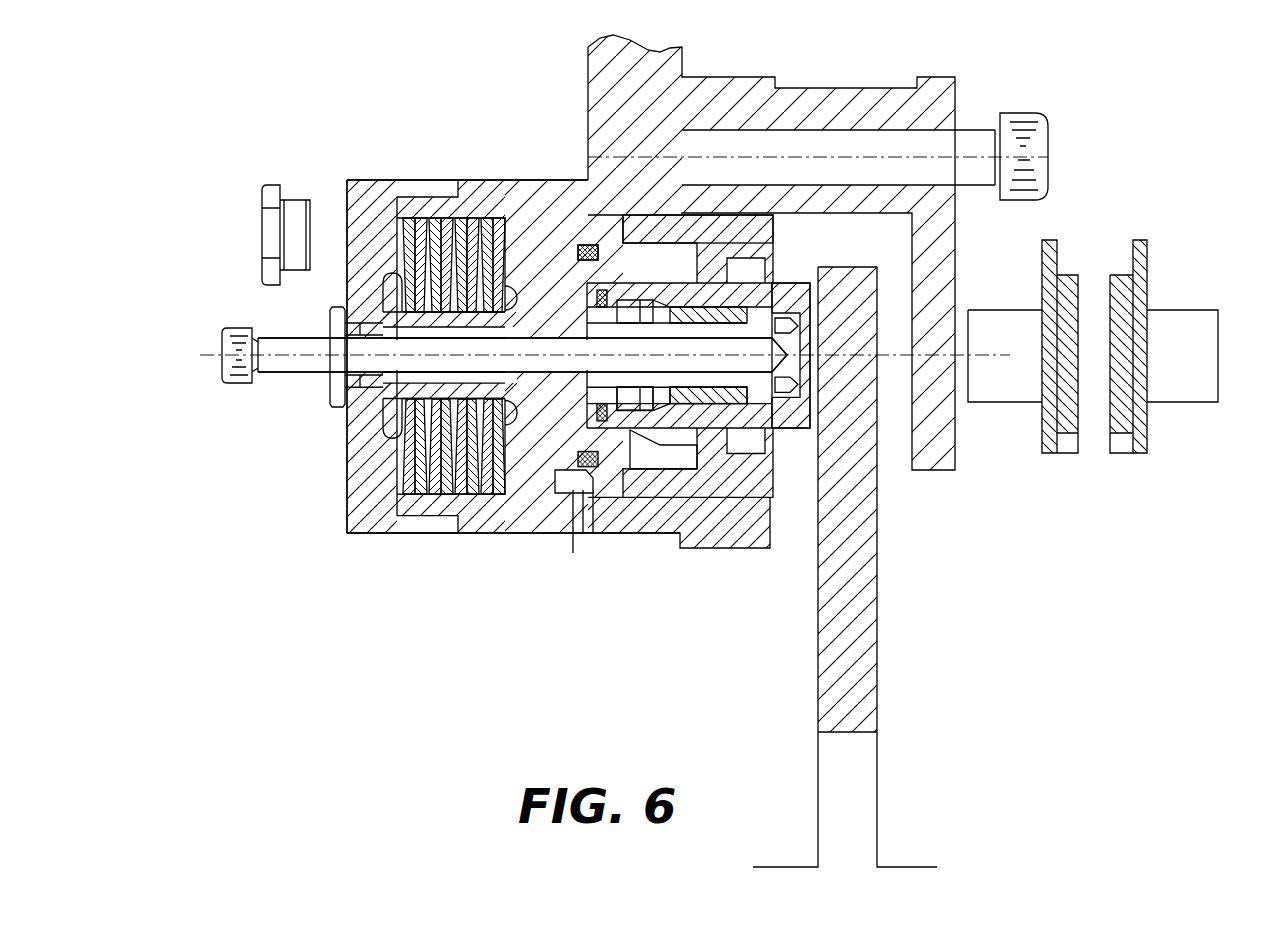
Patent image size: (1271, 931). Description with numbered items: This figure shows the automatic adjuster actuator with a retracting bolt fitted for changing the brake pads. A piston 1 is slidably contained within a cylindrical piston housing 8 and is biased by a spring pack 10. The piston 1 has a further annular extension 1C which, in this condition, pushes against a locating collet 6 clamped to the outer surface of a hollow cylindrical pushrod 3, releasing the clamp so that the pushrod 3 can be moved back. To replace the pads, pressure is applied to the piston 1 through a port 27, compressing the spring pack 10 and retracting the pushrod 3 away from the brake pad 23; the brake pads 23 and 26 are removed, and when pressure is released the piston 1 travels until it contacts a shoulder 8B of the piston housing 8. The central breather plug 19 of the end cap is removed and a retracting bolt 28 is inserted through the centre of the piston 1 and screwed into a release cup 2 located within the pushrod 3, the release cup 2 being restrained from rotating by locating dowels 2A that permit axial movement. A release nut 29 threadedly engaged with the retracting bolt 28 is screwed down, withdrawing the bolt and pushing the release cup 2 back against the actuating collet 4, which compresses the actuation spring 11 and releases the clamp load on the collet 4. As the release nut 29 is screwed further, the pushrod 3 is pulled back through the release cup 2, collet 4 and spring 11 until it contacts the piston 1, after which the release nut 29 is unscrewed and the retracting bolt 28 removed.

The piston 1 is at (540, 255).
The annular extension 1C is at (671, 213).
The release cup 2 is at (742, 395).
The locating dowels 2A is at (778, 320).
The pushrod 3 is at (592, 290).
The actuating collet 4 is at (632, 437).
The locating collet 6 is at (660, 445).
The piston housing 8 is at (490, 525).
The shoulder 8B is at (532, 505).
The spring pack 10 is at (442, 245).
The actuation spring 11 is at (622, 400).
The breather plug 19 is at (291, 200).
The brake pad 23 is at (1068, 425).
The brake pad 26 is at (1122, 425).
The port 27 is at (572, 545).
The retracting bolt 28 is at (226, 340).
The release nut 29 is at (335, 390).